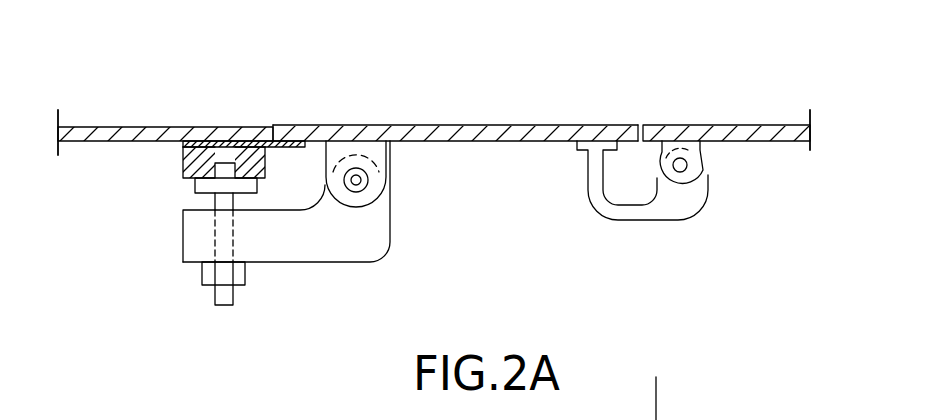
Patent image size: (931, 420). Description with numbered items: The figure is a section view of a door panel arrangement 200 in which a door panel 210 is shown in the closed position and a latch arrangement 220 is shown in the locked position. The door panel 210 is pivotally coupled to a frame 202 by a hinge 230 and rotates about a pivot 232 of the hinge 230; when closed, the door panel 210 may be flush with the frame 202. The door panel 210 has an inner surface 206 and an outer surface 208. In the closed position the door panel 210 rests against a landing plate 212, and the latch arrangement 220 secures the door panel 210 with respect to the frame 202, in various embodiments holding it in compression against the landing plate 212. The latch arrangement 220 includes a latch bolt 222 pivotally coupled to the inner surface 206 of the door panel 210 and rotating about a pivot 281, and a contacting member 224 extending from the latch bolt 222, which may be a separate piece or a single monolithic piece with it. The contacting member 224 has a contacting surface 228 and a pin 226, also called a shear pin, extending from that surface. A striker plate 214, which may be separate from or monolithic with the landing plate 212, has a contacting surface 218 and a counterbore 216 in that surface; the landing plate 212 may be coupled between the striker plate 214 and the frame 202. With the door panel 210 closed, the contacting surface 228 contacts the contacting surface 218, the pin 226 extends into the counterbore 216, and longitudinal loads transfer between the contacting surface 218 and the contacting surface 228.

The door panel arrangement 200 is at (430, 63).
The frame 202 is at (107, 128).
The inner surface 206 is at (514, 142).
The outer surface 208 is at (502, 125).
The door panel 210 is at (455, 125).
The landing plate 212 is at (288, 148).
The striker plate 214 is at (184, 160).
The counterbore 216 is at (240, 173).
The contacting surface 218 is at (250, 168).
The latch arrangement 220 is at (452, 269).
The latch bolt 222 is at (307, 264).
The contacting member 224 is at (200, 200).
The pin 226 is at (225, 177).
The contacting surface 228 is at (207, 177).
The hinge 230 is at (722, 233).
The pivot 232 is at (686, 168).
The pivot 281 is at (358, 181).